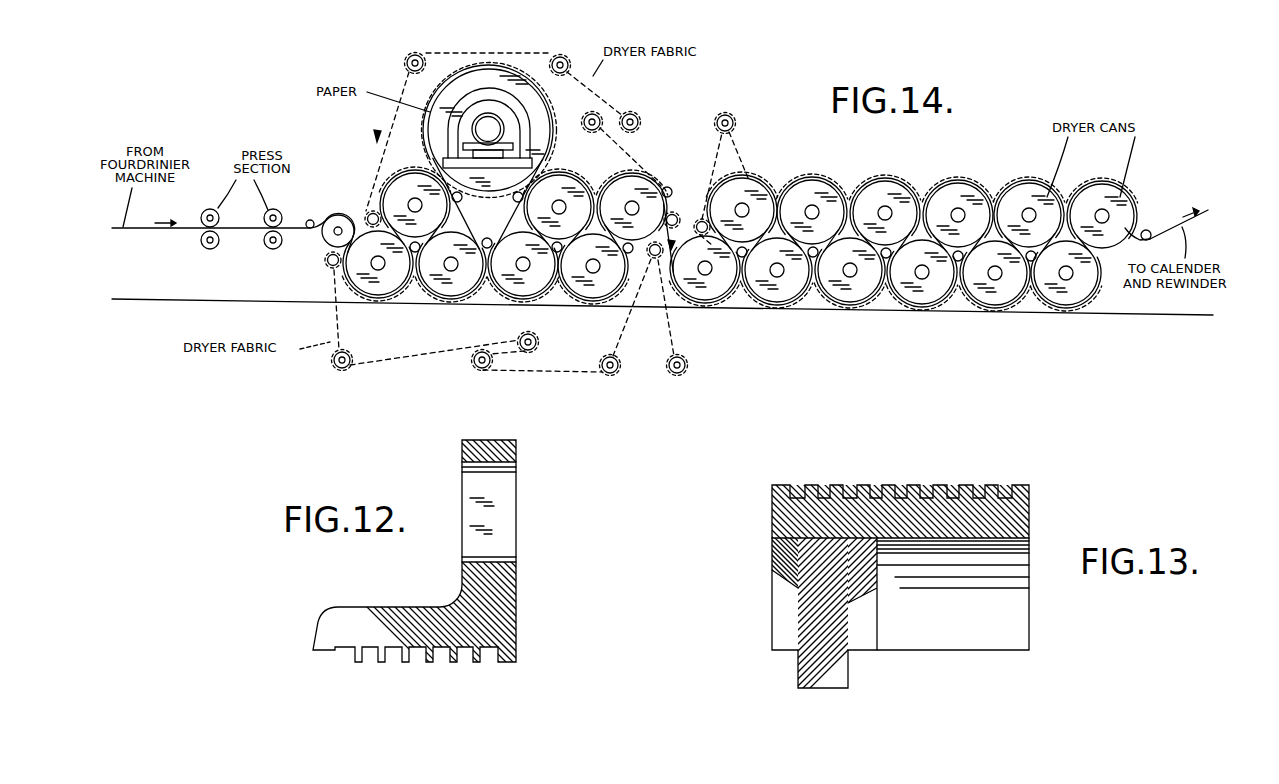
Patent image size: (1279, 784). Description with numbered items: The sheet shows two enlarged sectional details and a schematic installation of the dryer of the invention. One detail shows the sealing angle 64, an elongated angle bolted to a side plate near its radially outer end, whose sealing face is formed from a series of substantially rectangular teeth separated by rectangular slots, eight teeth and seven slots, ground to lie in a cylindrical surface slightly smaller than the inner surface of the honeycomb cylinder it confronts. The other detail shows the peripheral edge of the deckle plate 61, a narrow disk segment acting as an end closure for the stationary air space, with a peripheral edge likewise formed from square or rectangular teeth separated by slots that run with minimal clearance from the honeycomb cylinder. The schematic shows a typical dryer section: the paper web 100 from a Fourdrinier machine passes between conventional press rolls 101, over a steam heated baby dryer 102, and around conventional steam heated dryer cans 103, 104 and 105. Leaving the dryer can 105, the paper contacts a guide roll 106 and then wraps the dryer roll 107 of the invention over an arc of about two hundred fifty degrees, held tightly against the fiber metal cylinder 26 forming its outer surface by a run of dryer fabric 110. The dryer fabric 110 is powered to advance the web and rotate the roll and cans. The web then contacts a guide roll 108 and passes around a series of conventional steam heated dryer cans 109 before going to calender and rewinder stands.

In FIG. 14, the fiber metal cylinder 26 is at (492, 187).
In FIG. 13, the deckle plate 61 is at (943, 645).
In FIG. 12, the sealing angle 64 is at (505, 592).
In FIG. 14, the paper web 100 is at (158, 230).
In FIG. 14, the press rolls 101 is at (208, 212).
In FIG. 14, the baby dryer 102 is at (338, 222).
In FIG. 14, the dryer can 103 is at (380, 290).
In FIG. 14, the dryer can 104 is at (407, 183).
In FIG. 14, the dryer can 105 is at (452, 290).
In FIG. 14, the guide roll 106 is at (457, 203).
In FIG. 14, the dryer roll 107 is at (489, 117).
In FIG. 14, the guide roll 108 is at (518, 203).
In FIG. 14, the dryer cans 109 is at (565, 187).
In FIG. 14, the dryer fabric 110 is at (428, 52).